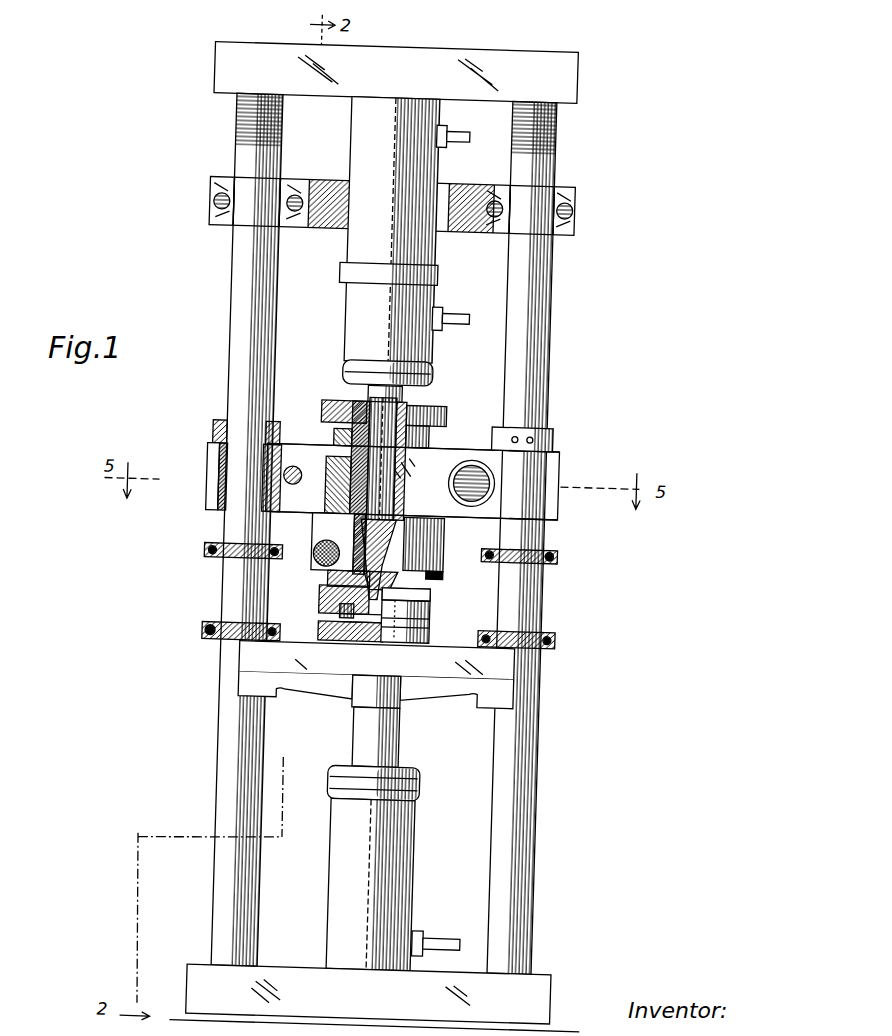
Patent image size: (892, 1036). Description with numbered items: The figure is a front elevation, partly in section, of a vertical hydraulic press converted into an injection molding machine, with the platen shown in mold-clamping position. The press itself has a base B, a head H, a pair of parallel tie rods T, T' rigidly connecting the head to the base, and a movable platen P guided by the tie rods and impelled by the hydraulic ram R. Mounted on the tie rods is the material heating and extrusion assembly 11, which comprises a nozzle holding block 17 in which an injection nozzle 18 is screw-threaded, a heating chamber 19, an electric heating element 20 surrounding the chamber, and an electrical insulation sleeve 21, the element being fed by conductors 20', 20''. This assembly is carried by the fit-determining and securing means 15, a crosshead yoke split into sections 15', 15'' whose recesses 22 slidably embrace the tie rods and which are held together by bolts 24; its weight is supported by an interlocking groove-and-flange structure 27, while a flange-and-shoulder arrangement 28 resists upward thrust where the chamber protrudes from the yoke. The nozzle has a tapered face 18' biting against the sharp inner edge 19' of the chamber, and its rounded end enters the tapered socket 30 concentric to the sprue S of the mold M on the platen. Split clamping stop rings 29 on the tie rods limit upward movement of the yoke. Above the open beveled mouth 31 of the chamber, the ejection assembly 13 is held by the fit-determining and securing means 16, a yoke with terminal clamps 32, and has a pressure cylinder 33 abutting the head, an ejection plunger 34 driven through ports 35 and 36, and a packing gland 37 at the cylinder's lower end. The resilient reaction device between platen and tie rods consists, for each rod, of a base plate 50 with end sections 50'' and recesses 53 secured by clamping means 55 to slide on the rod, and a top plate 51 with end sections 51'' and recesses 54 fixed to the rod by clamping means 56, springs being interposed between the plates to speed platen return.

The head H is at (210, 79).
The tie rod T is at (214, 528).
The tie rod / column T' is at (544, 538).
The fit-determining and securing means 16 is at (464, 182).
The terminal clamp 32 is at (238, 216).
The ejection assembly 13 is at (345, 254).
The pressure cylinder 33 is at (436, 268).
The port 35 is at (450, 130).
The port 36 is at (445, 310).
The packing gland 37 is at (431, 376).
The ejection plunger 34 is at (368, 394).
The flange-and-shoulder arrangement 28 is at (342, 406).
The conductor 20' is at (318, 468).
The conductor 20'' is at (336, 459).
The heating chamber 19 is at (421, 459).
The sharp inner edge 19' is at (420, 561).
The open beveled mouth 31 is at (430, 412).
The fit-determining and securing means 15 is at (434, 482).
The yoke section 15' is at (192, 475).
The yoke section 15'' is at (547, 449).
The electrical insulation sleeve 21 is at (302, 482).
The electric heating element 20 is at (317, 501).
The split clamping stop ring 29 is at (218, 425).
The fit-determining and bearing recess 22 is at (222, 494).
The bolt 24 is at (270, 500).
The nozzle holding block 17 is at (306, 569).
The interlocking groove-and-flange structure 27 is at (315, 555).
The material heating and extrusion assembly 11 is at (340, 578).
The tapered face 18' is at (331, 581).
The injection nozzle 18 is at (338, 590).
The tapered socket 30 is at (338, 608).
The mold M is at (448, 623).
The sprue S is at (430, 594).
The top plate 51 is at (381, 559).
The end section 51'' is at (580, 565).
The clamping means 56 is at (208, 556).
The base plate 50 is at (368, 650).
The end section 50'' is at (381, 632).
The clamping means 55 is at (212, 632).
The semicircular recess 53 is at (212, 630).
The semicircular recess 54 is at (208, 632).
The movable platen P is at (251, 665).
The hydraulic ram R is at (350, 890).
The base B is at (207, 998).